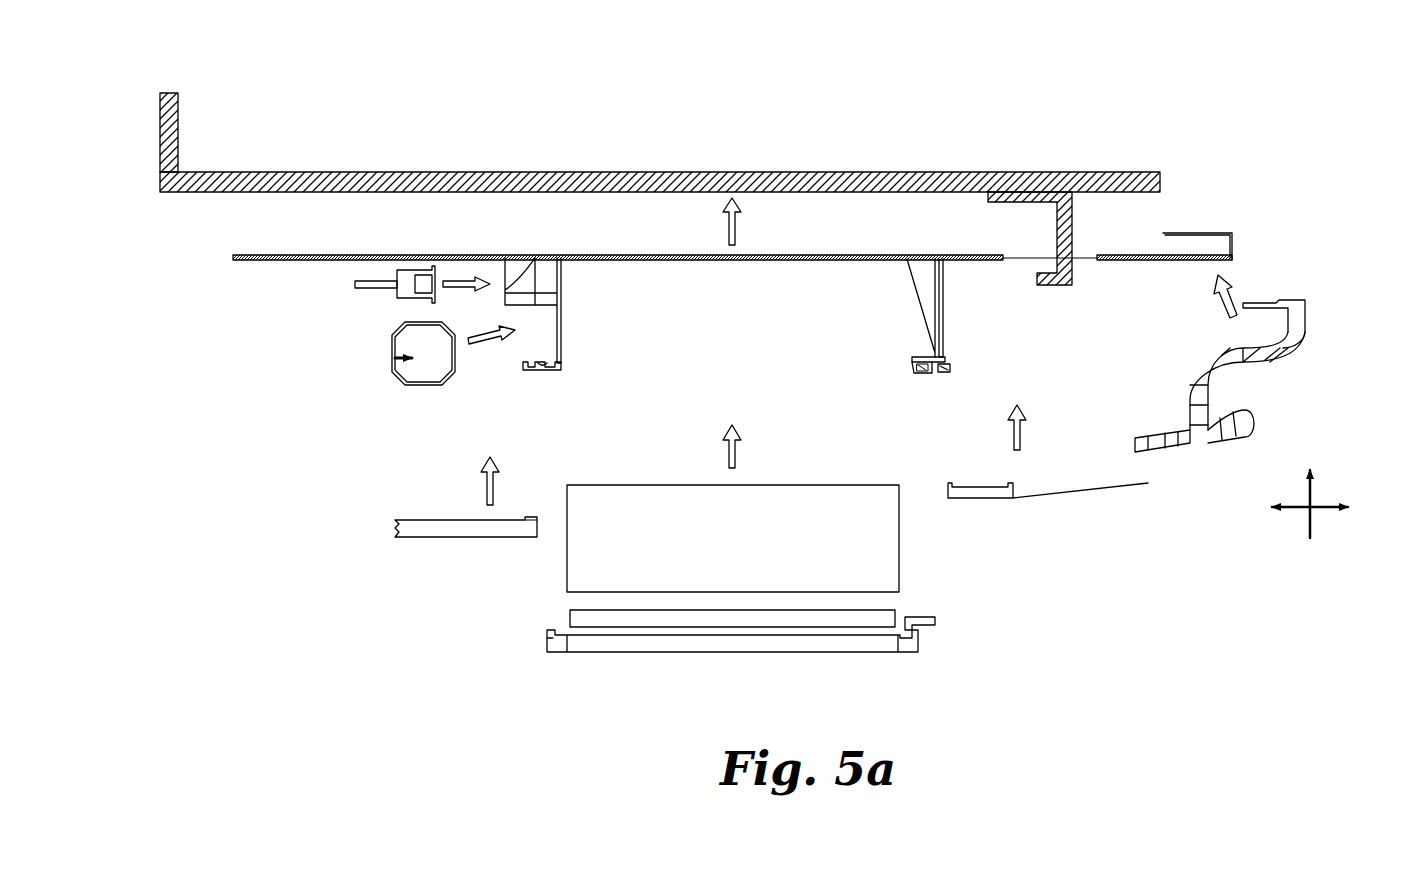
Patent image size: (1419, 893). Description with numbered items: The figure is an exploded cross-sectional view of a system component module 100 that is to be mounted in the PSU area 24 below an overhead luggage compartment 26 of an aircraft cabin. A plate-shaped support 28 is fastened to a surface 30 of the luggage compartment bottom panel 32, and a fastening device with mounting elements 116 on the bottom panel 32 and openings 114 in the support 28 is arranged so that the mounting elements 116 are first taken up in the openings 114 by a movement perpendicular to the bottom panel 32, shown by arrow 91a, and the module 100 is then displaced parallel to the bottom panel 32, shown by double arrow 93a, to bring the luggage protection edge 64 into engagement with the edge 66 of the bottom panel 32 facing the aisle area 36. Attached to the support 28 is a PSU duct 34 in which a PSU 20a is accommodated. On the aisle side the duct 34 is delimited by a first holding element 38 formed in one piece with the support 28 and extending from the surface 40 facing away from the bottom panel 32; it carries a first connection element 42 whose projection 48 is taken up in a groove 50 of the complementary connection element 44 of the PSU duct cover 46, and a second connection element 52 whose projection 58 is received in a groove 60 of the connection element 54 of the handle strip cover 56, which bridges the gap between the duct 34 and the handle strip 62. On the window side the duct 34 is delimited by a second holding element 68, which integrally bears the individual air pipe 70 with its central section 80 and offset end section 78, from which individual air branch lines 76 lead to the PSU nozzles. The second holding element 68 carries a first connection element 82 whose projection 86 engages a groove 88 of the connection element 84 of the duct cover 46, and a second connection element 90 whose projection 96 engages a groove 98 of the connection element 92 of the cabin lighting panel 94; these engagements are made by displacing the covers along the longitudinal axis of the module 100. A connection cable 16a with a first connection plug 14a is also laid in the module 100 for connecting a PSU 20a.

The overhead luggage compartment 26 is at (322, 106).
The luggage compartment bottom panel 32 is at (222, 172).
The edge of the luggage compartment bottom panel 66 is at (1136, 172).
The mounting element 116 is at (1016, 200).
The opening 114 is at (1018, 262).
The plate-shaped support 28 is at (265, 262).
The surface of the support 40 is at (292, 262).
The surface of the luggage compartment bottom panel 30 is at (250, 265).
The first connection plug 14a is at (422, 281).
The connection cable 16a is at (380, 283).
The second holding element 68 is at (516, 272).
The individual air branch line 76 is at (527, 287).
The first connection element of the second holding element 82 is at (566, 360).
The projection 86 is at (556, 372).
The groove 88 is at (541, 372).
The complementary connection element of the PSU duct cover 84 is at (548, 386).
The complementary connection element of the cabin lighting panel 92 is at (538, 382).
The individual air pipe 70 is at (392, 362).
The end section 78 is at (392, 354).
The central section 80 is at (392, 344).
The second connection element of the second holding element 90 is at (495, 368).
The PSU area 24 is at (470, 410).
The first holding element 38 is at (924, 282).
The complementary connection element of the PSU duct cover 44 is at (905, 342).
The groove 50 is at (916, 357).
The groove 60 is at (940, 357).
The projection 58 is at (948, 367).
The projection 48 is at (916, 372).
The first connection element of the first holding element 42 is at (913, 382).
The second connection element of the first holding element 52 is at (941, 382).
The complementary connection element of the handle strip cover 54 is at (936, 398).
The luggage protection edge 64 is at (1284, 303).
The aisle area 36 is at (1220, 392).
The handle strip 62 is at (1250, 422).
The system component module 100 is at (1082, 408).
The handle strip cover 56 is at (1006, 500).
The double arrow 93a is at (1320, 502).
The arrow 91a is at (1312, 524).
The cabin lighting panel 94 is at (408, 530).
The projection 96 is at (524, 522).
The groove 98 is at (534, 524).
The PSU 20a is at (733, 538).
The PSU duct 34 is at (628, 608).
The PSU duct cover 46 is at (702, 640).